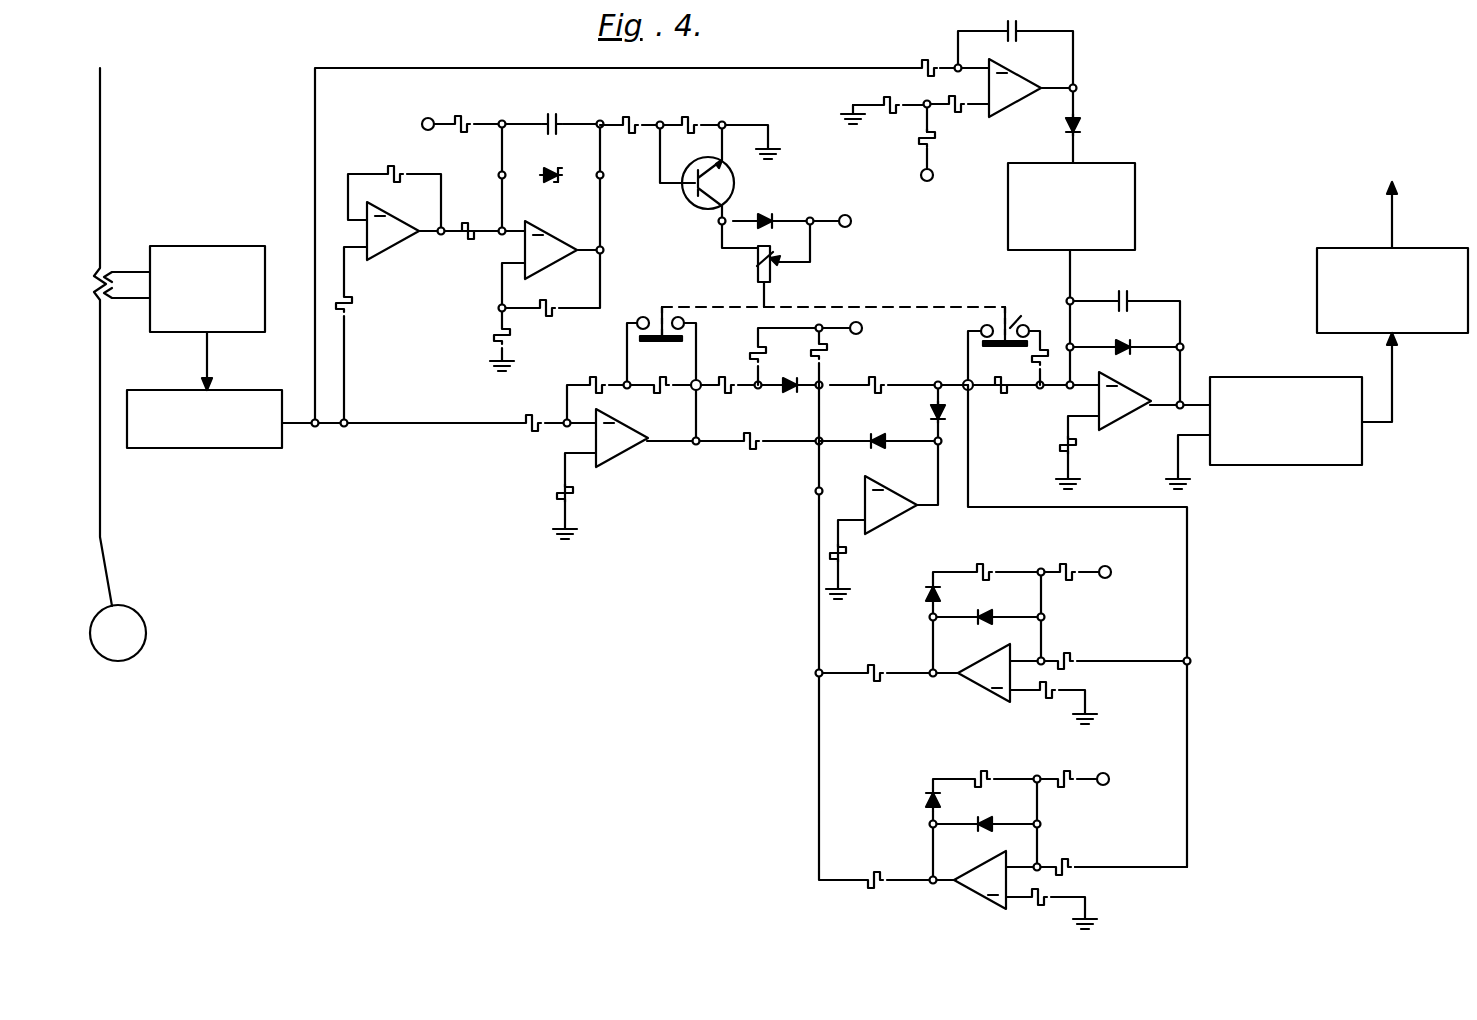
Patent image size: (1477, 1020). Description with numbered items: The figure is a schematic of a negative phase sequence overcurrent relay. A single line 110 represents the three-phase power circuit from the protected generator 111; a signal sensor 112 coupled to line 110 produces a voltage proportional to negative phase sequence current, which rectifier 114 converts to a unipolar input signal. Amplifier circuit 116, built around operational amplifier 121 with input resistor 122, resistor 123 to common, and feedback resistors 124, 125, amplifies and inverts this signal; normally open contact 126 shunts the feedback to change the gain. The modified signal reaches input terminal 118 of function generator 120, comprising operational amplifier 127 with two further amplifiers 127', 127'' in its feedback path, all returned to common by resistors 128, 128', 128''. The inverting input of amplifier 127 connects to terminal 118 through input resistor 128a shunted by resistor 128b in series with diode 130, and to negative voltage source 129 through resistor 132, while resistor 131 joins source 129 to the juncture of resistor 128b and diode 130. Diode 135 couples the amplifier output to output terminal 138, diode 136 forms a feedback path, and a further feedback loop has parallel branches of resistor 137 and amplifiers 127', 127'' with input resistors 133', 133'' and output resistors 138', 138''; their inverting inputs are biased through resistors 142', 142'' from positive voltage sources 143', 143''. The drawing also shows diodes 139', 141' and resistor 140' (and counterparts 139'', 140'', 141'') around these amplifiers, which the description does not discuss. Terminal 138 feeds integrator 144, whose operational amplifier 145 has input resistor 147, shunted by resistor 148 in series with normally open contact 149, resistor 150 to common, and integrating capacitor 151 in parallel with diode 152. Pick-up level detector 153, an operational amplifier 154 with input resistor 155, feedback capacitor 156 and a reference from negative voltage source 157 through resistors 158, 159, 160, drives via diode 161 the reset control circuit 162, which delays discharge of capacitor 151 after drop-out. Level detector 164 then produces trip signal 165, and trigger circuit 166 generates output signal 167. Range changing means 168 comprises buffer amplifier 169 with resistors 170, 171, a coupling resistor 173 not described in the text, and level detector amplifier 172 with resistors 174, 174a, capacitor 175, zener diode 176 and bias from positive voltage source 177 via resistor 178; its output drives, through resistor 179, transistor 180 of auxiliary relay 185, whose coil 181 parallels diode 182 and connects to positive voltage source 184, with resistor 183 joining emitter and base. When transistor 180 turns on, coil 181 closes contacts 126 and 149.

The line 110 is at (104, 136).
The protected generator 111 is at (148, 628).
The signal sensor 112 is at (205, 246).
The rectification means 114 is at (200, 448).
The amplifier circuit 116 is at (658, 423).
The input terminal 118 is at (690, 378).
The function generator 120 is at (1003, 660).
The operational amplifier 121 is at (635, 448).
The input resistor 122 is at (530, 435).
The resistor 123 is at (555, 495).
The feedback resistor 124 is at (668, 396).
The feedback resistor 125 is at (595, 375).
The normally open contact 126 is at (655, 316).
The operational amplifier 127 is at (908, 510).
The operational amplifier 127' is at (976, 668).
The operational amplifier 127'' is at (974, 875).
The resistor 128 is at (870, 571).
The resistor 128' is at (1041, 717).
The resistor 128'' is at (1014, 912).
The input resistor 128a is at (757, 455).
The input resistor 128b is at (735, 396).
The negative voltage source 129 is at (856, 335).
The diode 130 is at (793, 393).
The resistor 131 is at (752, 358).
The resistor 132 is at (812, 355).
The input resistor 133' is at (1086, 644).
The input resistor 133'' is at (1087, 850).
The diode 135 is at (930, 415).
The diode 136 is at (890, 448).
The resistor 137 is at (885, 380).
The output terminal 138 is at (985, 410).
The output resistor 138' is at (861, 654).
The output resistor 138'' is at (857, 861).
The diode 139' is at (1008, 606).
The diode 139'' is at (1007, 810).
The resistor 140' is at (989, 555).
The resistor 140'' is at (971, 761).
The diode 141' is at (906, 597).
The diode 141'' is at (901, 802).
The resistor 142' is at (1069, 555).
The resistor 142'' is at (1078, 761).
The positive voltage source 143' is at (1136, 557).
The positive voltage source 143'' is at (1134, 762).
The integrator 144 is at (1086, 369).
The operational amplifier 145 is at (1128, 398).
The resistor 147 is at (1003, 395).
The resistor 148 is at (1030, 366).
The normally open contact 149 is at (1018, 318).
The resistor 150 is at (1060, 450).
The integrating capacitor 151 is at (1128, 290).
The diode 152 is at (1120, 340).
The pick-up level detector circuit 153 is at (986, 104).
The operational amplifier 154 is at (1020, 86).
The input resistor 155 is at (928, 60).
The capacitor 156 is at (1025, 30).
The negative voltage source 157 is at (920, 170).
The resistor 158 is at (890, 95).
The resistor 159 is at (958, 112).
The resistor 160 is at (920, 140).
The diode 161 is at (1080, 125).
The reset control circuit 162 is at (1135, 205).
The level detector 164 is at (1285, 465).
The trip signal 165 is at (1395, 390).
The trigger 166 is at (1348, 248).
The output signal 167 is at (1395, 215).
The range changing means 168 is at (470, 223).
The buffer amplifier 169 is at (396, 222).
The resistor 170 is at (352, 304).
The resistor 171 is at (392, 165).
The operational amplifier 172 is at (553, 242).
The resistor 173 is at (466, 226).
The resistor 174 is at (490, 337).
The resistor 174a is at (548, 303).
The capacitor 175 is at (552, 112).
The zener diode 176 is at (556, 183).
The positive voltage source 177 is at (431, 132).
The resistor 178 is at (463, 112).
The resistor 179 is at (632, 112).
The transistor 180 is at (684, 196).
The operation coil 181 is at (757, 268).
The diode 182 is at (766, 212).
The resistor 183 is at (690, 112).
The positive voltage source 184 is at (842, 213).
The auxiliary relay 185 is at (753, 191).